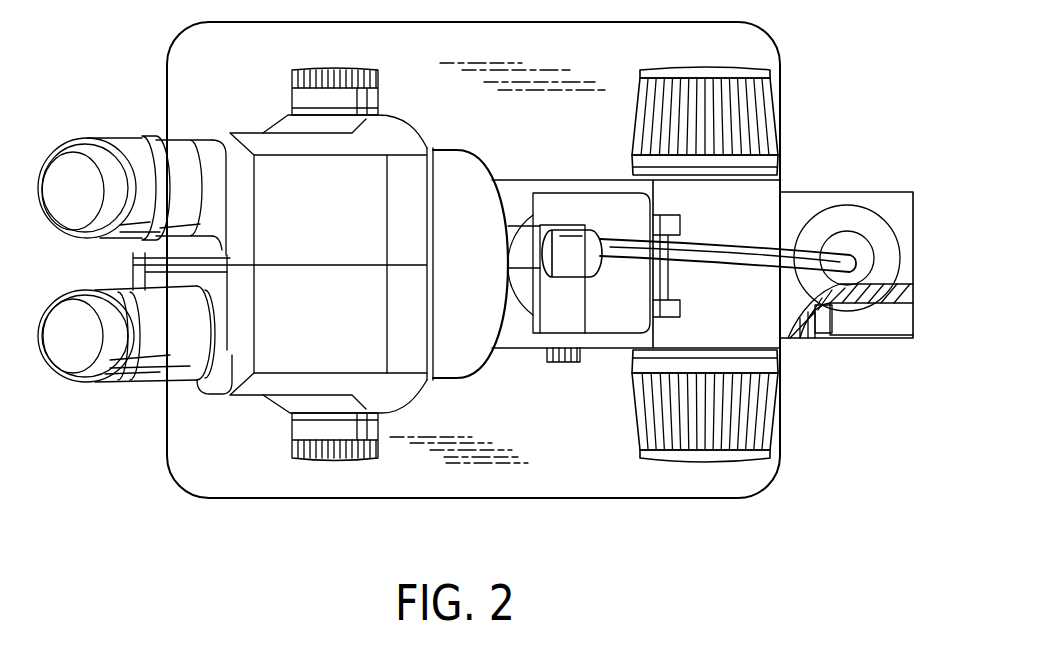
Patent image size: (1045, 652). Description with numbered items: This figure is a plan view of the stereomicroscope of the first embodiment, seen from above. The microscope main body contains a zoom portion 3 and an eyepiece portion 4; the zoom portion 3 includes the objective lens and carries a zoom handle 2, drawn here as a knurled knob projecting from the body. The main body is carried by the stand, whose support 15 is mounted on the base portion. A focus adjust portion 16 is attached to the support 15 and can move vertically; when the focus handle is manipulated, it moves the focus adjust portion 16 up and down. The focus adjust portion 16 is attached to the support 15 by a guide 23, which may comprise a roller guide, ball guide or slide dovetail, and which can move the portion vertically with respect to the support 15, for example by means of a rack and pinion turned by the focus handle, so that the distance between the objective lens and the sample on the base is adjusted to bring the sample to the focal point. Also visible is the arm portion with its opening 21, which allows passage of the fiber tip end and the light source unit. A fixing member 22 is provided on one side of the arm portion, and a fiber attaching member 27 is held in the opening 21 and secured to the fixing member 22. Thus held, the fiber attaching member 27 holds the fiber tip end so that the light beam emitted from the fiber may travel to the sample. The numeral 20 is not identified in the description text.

The zoom handle 2 is at (332, 95).
The zoom portion 3 is at (362, 167).
The eyepiece portion 4 is at (140, 367).
The support 15 is at (767, 196).
The focus adjust portion 16 is at (680, 289).
The fixing member 20 is at (826, 324).
The opening 21 is at (578, 206).
The fixing member 22 is at (562, 372).
The guide 23 is at (663, 320).
The fiber attaching member 27 is at (550, 322).